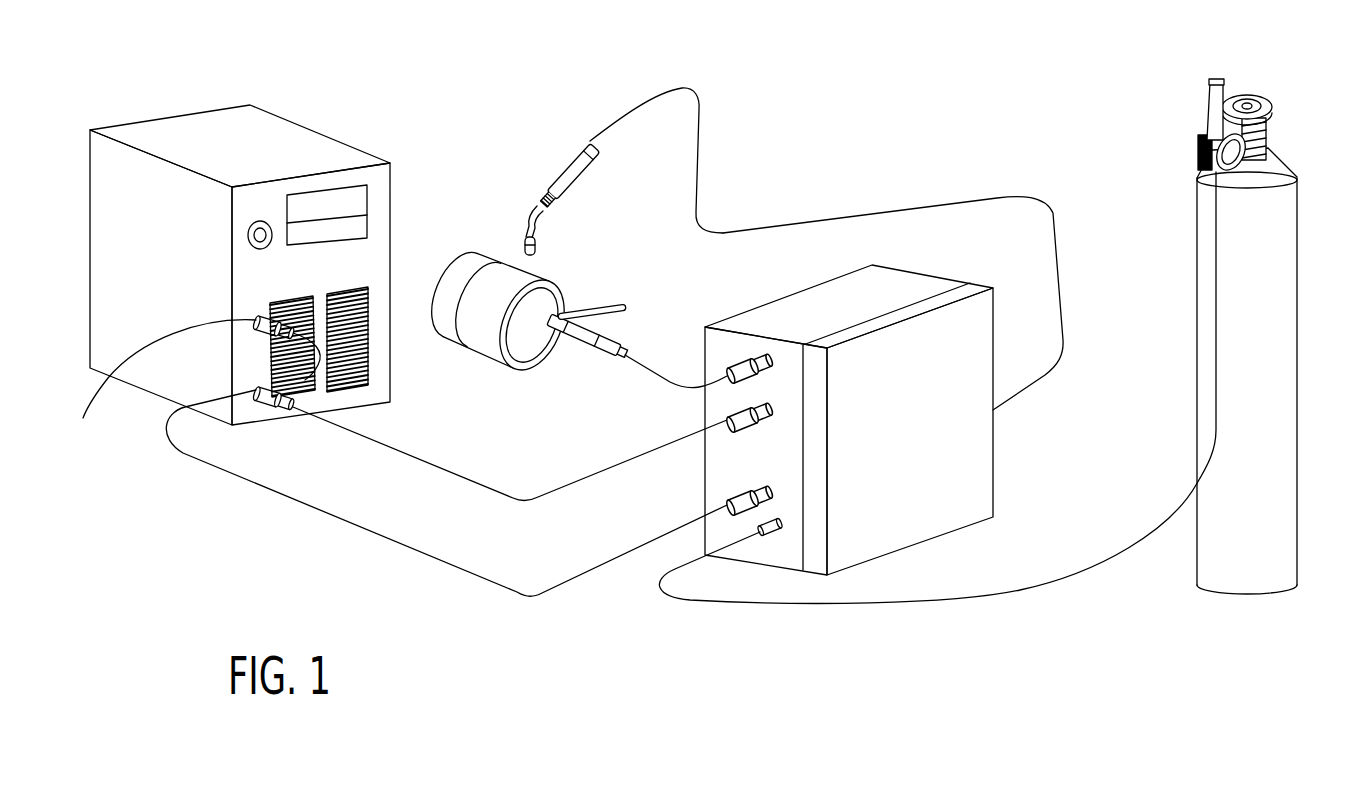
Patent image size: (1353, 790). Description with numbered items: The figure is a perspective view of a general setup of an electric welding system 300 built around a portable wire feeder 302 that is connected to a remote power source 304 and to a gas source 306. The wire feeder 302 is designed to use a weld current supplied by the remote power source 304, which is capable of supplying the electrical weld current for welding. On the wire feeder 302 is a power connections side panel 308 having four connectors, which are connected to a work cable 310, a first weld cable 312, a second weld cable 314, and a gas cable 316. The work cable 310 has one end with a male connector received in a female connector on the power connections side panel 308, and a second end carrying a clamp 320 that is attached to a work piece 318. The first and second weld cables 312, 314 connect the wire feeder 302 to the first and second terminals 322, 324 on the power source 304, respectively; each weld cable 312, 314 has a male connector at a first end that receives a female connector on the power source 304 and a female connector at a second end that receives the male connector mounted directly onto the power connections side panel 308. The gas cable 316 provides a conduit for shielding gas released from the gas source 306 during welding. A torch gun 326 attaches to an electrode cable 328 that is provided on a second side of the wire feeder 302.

The electric welding system 300 is at (1125, 647).
The wire feeder 302 is at (978, 516).
The remote power source 304 is at (318, 136).
The gas source 306 is at (1282, 153).
The power connections side panel 308 is at (703, 492).
The work cable 310 is at (655, 373).
The first weld cable 312 is at (463, 483).
The second weld cable 314 is at (458, 572).
The gas cable 316 is at (788, 603).
The work piece 318 is at (480, 357).
The clamp 320 is at (593, 352).
The first terminal 322 is at (260, 410).
The second terminal 324 is at (179, 384).
The torch gun 326 is at (555, 179).
The electrode cable 328 is at (878, 213).